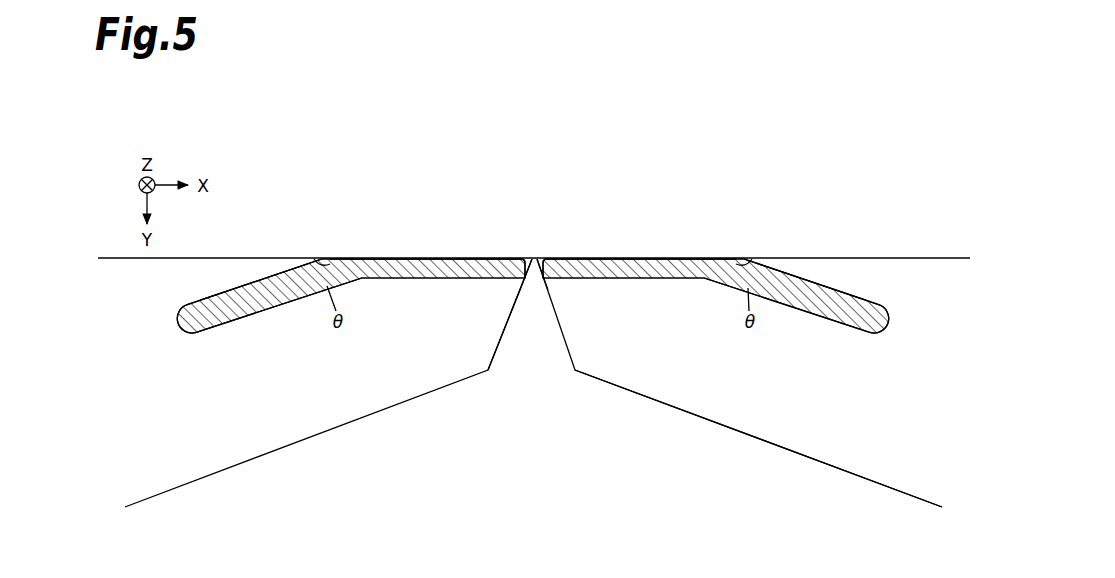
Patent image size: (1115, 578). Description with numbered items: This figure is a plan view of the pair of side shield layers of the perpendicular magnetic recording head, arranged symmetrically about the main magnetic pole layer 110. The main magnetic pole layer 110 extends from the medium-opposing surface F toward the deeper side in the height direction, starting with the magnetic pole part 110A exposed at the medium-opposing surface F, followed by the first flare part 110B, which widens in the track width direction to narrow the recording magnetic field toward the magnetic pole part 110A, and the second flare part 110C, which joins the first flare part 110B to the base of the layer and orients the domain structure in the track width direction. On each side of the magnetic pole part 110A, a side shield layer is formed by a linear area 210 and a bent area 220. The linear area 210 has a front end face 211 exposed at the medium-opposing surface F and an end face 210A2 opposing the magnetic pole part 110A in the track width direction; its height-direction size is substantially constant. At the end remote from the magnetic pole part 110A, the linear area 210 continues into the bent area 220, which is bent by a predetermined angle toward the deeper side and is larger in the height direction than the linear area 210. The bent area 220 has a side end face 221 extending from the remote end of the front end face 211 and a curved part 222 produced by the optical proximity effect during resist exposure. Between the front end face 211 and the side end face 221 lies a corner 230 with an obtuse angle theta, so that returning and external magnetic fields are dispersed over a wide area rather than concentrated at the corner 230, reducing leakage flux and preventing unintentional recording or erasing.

The main magnetic pole layer 110 is at (224, 464).
The magnetic pole part 110A is at (534, 257).
The first flare part 110B is at (548, 356).
The second flare part 110C is at (767, 441).
The linear area 210 is at (413, 279).
The end face 210A2 is at (527, 258).
The front end face 211 is at (432, 258).
The bent area 220 is at (252, 302).
The side end face 221 is at (232, 289).
The curved part 222 is at (179, 322).
The corner 230 is at (318, 253).
The medium-opposing surface F is at (862, 257).